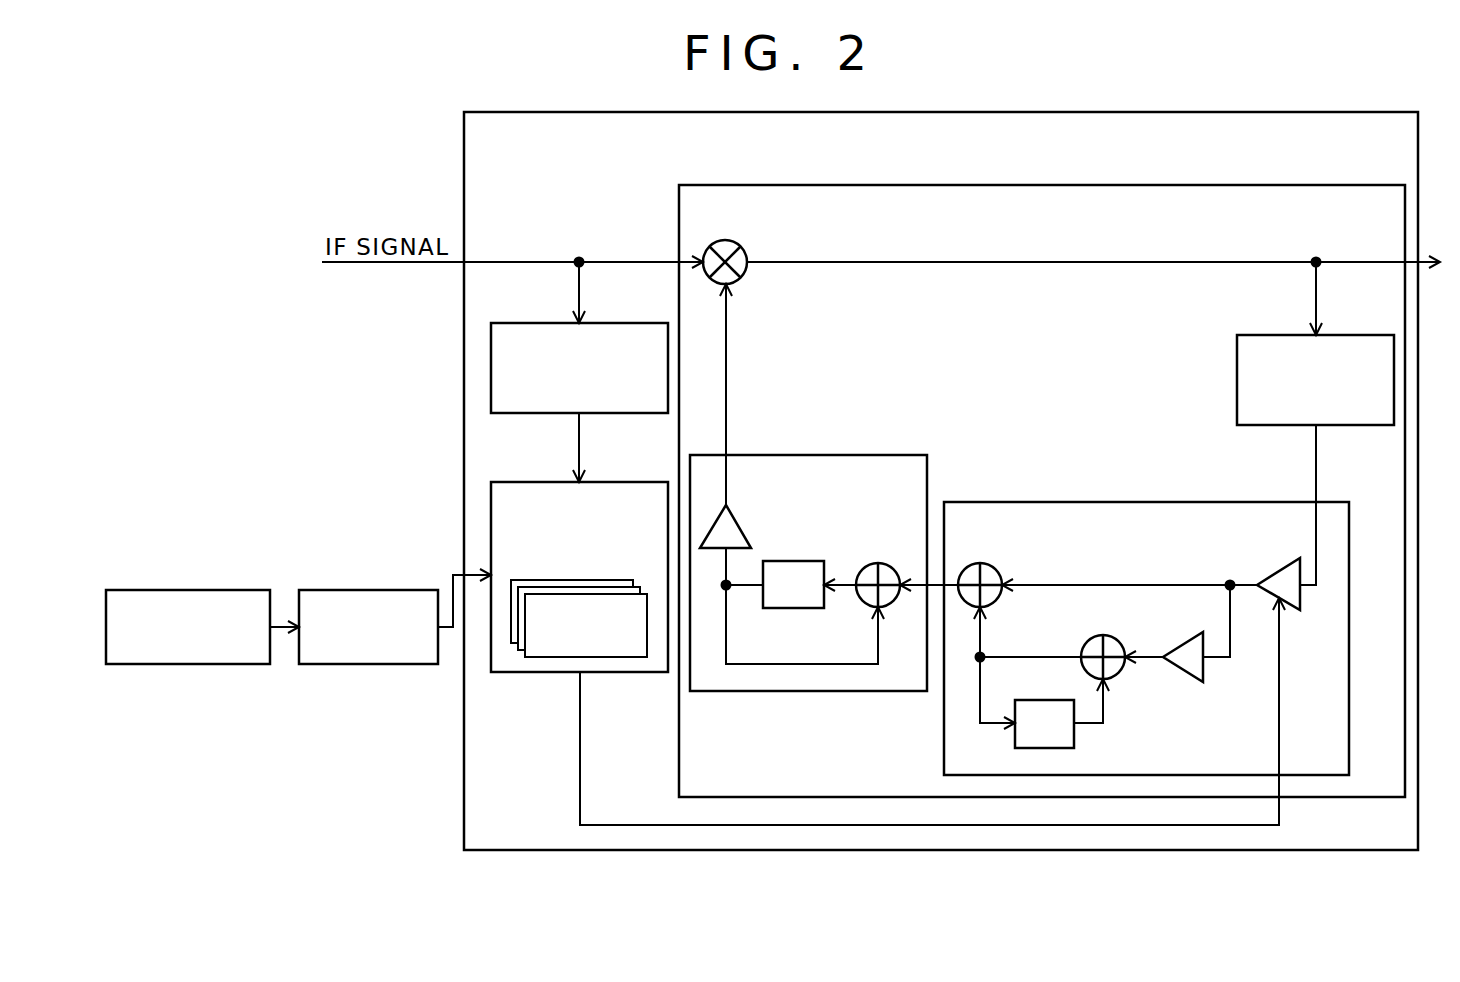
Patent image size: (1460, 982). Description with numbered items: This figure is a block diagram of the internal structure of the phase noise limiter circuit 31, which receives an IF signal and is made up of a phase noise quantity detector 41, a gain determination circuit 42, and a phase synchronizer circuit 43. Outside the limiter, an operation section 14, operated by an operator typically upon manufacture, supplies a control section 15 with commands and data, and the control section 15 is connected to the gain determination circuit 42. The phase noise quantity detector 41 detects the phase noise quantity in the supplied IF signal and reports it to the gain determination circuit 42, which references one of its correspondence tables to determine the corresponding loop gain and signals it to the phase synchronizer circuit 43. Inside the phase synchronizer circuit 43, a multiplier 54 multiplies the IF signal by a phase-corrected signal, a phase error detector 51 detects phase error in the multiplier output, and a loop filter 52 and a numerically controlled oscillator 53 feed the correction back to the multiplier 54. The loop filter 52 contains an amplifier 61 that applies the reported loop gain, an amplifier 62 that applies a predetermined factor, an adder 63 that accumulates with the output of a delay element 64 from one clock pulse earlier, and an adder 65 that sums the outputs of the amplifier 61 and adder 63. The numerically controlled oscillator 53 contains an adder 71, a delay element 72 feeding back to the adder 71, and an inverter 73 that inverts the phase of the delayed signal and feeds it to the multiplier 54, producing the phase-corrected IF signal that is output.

The operation section 14 is at (192, 590).
The control section 15 is at (368, 590).
The phase noise limiter circuit 31 is at (1337, 112).
The phase noise quantity detector 41 is at (618, 323).
The gain determination circuit 42 is at (617, 482).
The phase synchronizer circuit 43 is at (1262, 185).
The phase error detector 51 is at (1358, 335).
The loop filter 52 is at (1122, 502).
The numerically controlled oscillator 53 is at (822, 455).
The multiplier 54 is at (741, 273).
The amplifier 61 is at (1278, 565).
The amplifier 62 is at (1180, 675).
The adder 63 is at (1104, 635).
The delay element 64 is at (1074, 735).
The adder 65 is at (980, 563).
The adder 71 is at (880, 563).
The delay element 72 is at (805, 561).
The inverter 73 is at (736, 515).